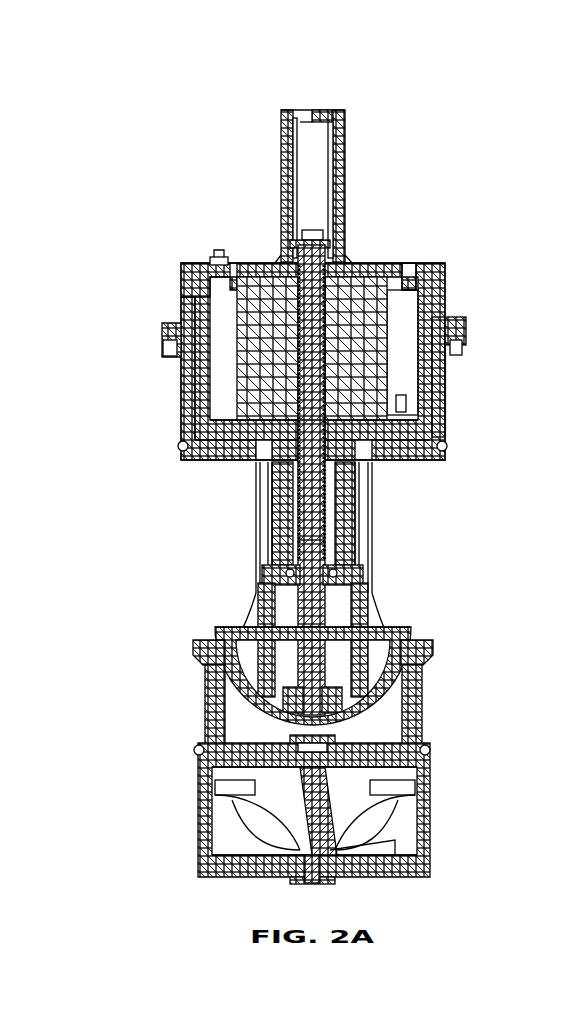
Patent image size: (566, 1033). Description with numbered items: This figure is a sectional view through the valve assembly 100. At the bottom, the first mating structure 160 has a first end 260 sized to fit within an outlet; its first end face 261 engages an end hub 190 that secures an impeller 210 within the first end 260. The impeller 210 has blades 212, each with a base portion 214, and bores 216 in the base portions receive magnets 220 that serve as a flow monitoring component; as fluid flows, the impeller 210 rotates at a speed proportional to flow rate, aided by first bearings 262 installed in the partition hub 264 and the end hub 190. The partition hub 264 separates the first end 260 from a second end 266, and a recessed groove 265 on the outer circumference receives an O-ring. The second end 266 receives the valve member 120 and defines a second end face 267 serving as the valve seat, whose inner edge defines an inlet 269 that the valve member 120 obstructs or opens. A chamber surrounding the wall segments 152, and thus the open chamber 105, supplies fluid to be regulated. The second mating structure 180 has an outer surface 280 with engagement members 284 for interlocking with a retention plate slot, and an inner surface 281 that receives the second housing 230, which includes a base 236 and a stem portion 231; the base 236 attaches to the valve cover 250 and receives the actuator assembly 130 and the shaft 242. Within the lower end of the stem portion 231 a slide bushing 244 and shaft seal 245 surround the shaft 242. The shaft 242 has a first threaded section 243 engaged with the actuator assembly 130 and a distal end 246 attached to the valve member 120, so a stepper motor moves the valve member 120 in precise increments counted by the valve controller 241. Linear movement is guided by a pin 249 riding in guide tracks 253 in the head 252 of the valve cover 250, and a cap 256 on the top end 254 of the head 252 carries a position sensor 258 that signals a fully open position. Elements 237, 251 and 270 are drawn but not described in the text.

The valve assembly 100 is at (500, 98).
The open chamber 105 is at (250, 501).
The valve member 120 is at (206, 627).
The actuator assembly 130 is at (176, 279).
The wall segments 152 is at (375, 592).
The first mating structure 160 is at (440, 644).
The second mating structure 180 is at (428, 458).
The end hub 190 is at (256, 868).
The impeller 210 is at (405, 848).
The blades 212 is at (400, 743).
The base portion 214 is at (400, 812).
The bores 216 is at (405, 803).
The magnets 220 is at (410, 781).
The second housing 230 is at (120, 468).
The stem portion 231 is at (272, 478).
The base 236 is at (191, 396).
The channel 237 is at (240, 368).
The valve controller 241 is at (430, 392).
The shaft 242 is at (300, 545).
The first threaded section 243 is at (300, 517).
The slide bushing 244 is at (295, 572).
The shaft seal 245 is at (270, 586).
The distal end 246 is at (280, 710).
The pin 249 is at (343, 245).
The valve cover 250 is at (192, 265).
The notch 251 is at (419, 265).
The head 252 is at (283, 165).
The guide tracks 253 is at (340, 200).
The top end 254 is at (300, 112).
The cap 256 is at (307, 118).
The position sensor 258 is at (346, 117).
The first end 260 is at (207, 815).
The first end face 261 is at (205, 873).
The first bearings 262 is at (334, 879).
The partition hub 264 is at (210, 780).
The recessed groove 265 is at (196, 752).
The second end 266 is at (215, 700).
The second end face 267 is at (210, 635).
The inlet 269 is at (222, 665).
The pin 270 is at (213, 260).
The outer surface 280 is at (446, 430).
The inner surface 281 is at (416, 396).
The engagement members 284 is at (461, 322).